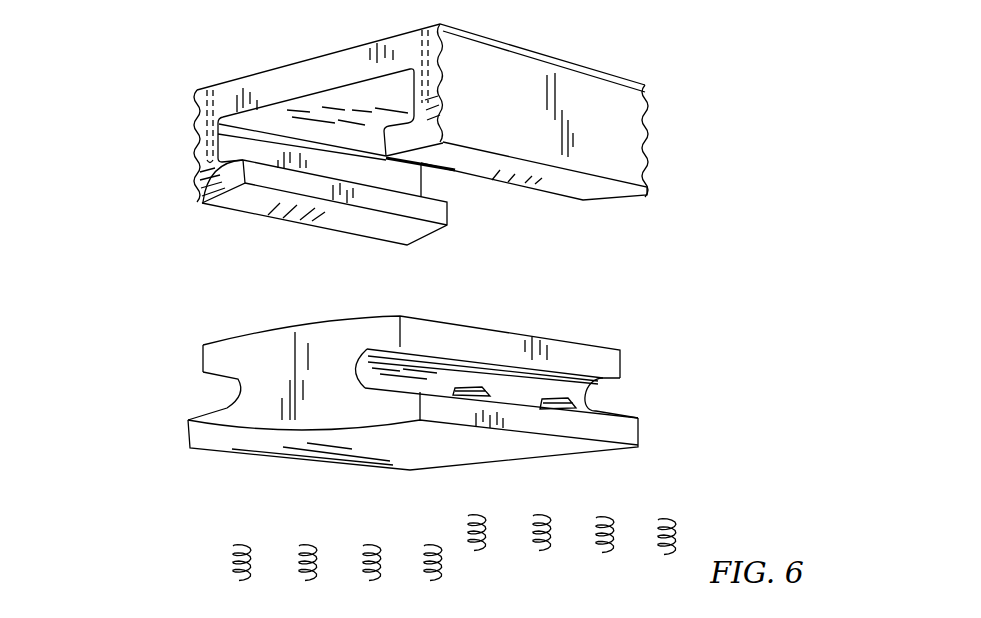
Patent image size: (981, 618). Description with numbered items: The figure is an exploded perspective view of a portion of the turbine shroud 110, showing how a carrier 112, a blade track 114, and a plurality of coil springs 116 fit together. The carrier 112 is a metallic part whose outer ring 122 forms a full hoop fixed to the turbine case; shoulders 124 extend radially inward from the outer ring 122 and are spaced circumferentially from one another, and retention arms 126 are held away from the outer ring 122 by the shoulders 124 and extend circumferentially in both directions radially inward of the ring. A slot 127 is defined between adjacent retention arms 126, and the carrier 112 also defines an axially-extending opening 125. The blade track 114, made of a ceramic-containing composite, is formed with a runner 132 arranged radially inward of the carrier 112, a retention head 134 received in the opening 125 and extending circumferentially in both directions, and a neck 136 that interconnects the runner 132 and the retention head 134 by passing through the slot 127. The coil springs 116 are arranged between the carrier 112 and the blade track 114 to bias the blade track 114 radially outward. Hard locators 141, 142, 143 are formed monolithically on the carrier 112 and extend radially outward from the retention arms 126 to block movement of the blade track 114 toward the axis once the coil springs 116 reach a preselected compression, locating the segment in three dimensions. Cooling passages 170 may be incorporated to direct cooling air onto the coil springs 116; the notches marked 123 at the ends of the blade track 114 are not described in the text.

The turbine shroud 110 is at (100, 99).
The carrier 112 is at (668, 136).
The blade track 114 is at (645, 349).
The coil springs 116 is at (258, 561).
The outer ring 122 is at (321, 66).
The notches 123 is at (220, 388).
The shoulders 124 is at (195, 142).
The axially-extending opening 125 is at (292, 121).
The retention arms 126 is at (500, 180).
The slot 127 is at (207, 201).
The runner 132 is at (203, 424).
The retention head 134 is at (224, 360).
The neck 136 is at (380, 370).
The hard locator 141 is at (475, 380).
The hard locator 142 is at (560, 392).
The hard locator 143 is at (206, 405).
The cooling passages 170 is at (209, 87).